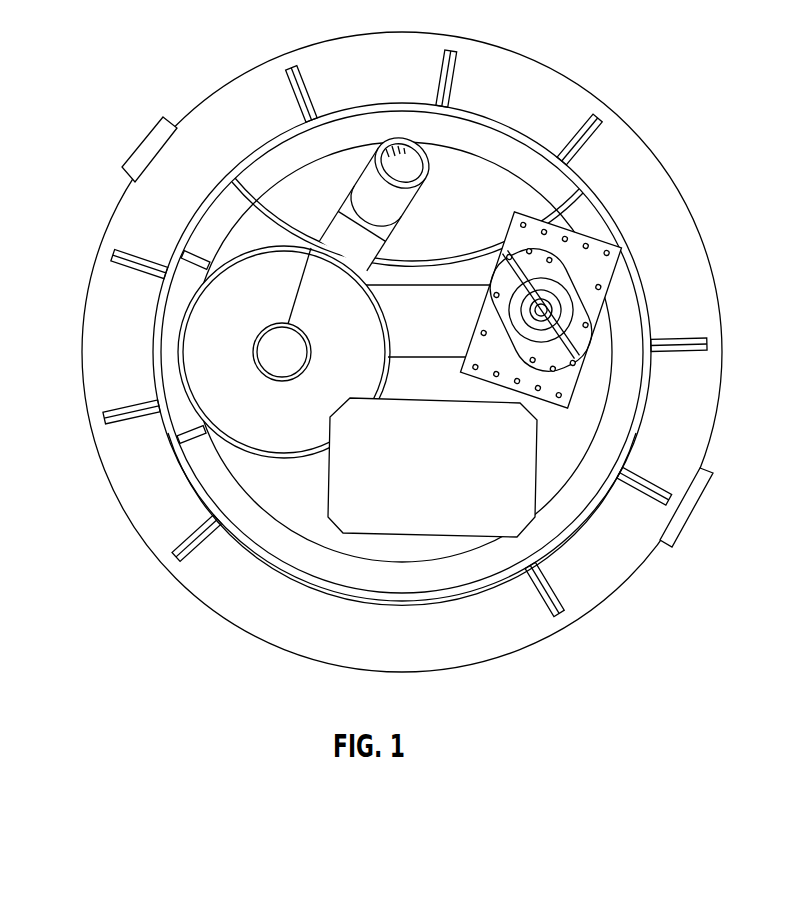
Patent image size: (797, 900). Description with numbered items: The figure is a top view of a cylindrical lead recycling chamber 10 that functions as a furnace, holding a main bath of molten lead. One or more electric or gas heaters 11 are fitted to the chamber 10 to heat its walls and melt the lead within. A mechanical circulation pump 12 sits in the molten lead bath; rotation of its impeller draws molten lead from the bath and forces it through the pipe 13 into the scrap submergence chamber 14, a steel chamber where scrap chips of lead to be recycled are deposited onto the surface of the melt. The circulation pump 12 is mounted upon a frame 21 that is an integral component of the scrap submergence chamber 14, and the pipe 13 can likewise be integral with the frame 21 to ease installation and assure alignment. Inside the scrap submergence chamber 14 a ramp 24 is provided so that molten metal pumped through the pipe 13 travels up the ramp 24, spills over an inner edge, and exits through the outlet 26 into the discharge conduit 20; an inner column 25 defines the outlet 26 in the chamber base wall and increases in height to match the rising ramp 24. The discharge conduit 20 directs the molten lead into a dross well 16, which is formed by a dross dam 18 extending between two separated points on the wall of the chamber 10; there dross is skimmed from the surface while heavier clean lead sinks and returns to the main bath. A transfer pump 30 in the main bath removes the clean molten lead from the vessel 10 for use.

The lead recycling chamber 10 is at (633, 128).
The heater 11 is at (141, 137).
The mechanical circulation pump 12 is at (572, 382).
The conduit 13 is at (383, 283).
The scrap submergence chamber 14 is at (356, 332).
The dross well 16 is at (447, 167).
The dross dam 18 is at (466, 240).
The discharge conduit 20 is at (323, 177).
The frame 21 is at (429, 328).
The ramp 24 is at (216, 381).
The inner column 25 is at (274, 380).
The outlet 26 is at (297, 365).
The transfer pump 30 is at (447, 482).